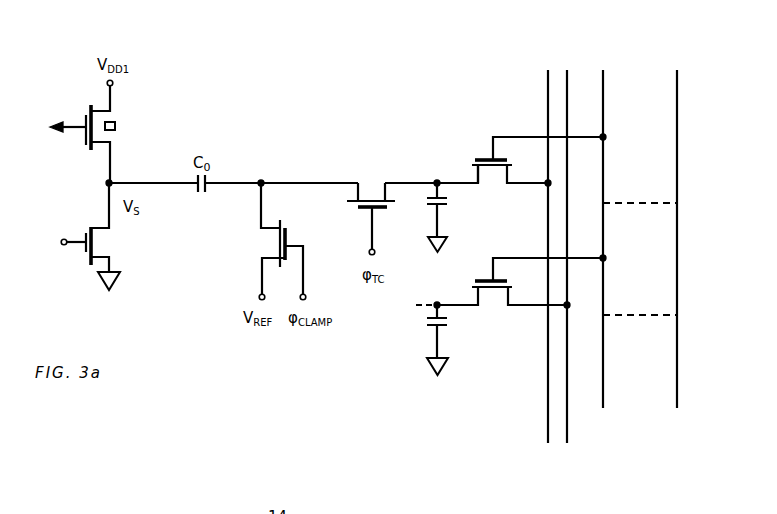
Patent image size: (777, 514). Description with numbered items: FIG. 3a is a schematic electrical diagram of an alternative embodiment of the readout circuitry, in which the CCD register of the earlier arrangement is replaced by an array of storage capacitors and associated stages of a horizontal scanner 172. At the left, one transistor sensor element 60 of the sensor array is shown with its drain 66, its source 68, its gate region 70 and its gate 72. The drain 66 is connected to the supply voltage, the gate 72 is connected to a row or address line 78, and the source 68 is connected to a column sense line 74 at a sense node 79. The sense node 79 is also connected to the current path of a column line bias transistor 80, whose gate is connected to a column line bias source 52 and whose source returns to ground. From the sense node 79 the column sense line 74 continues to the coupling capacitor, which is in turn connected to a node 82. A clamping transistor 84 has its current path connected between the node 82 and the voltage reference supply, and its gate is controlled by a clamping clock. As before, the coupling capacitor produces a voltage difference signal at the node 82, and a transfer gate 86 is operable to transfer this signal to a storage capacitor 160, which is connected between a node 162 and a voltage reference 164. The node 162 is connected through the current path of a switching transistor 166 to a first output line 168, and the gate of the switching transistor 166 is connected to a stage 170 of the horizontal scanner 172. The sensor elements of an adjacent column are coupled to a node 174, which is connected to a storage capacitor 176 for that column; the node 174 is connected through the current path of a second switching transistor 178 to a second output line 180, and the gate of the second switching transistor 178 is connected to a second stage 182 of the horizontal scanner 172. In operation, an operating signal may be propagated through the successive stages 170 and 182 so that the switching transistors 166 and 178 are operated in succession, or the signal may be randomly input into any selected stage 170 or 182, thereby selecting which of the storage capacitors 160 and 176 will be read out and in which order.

The column line bias source 52 is at (65, 239).
The transistor sensor element 60 is at (118, 130).
The drain 66 is at (111, 101).
The source 68 is at (110, 148).
The gate region 70 is at (115, 127).
The gate 72 is at (84, 140).
The column sense line 74 is at (172, 185).
The row line 78 is at (76, 124).
The sense node 79 is at (108, 184).
The column line bias transistor 80 is at (81, 236).
The node 82 is at (262, 181).
The clamping transistor 84 is at (285, 225).
The transfer gate 86 is at (356, 211).
The storage capacitor 160 is at (449, 203).
The node 162 is at (435, 180).
The voltage reference 164 is at (428, 243).
The switching transistor 166 is at (493, 173).
The first output line 168 is at (547, 105).
The stage of horizontal scanner 170 is at (656, 156).
The horizontal scanner 172 is at (645, 58).
The node 174 is at (440, 301).
The storage capacitor 176 is at (449, 322).
The second switching transistor 178 is at (497, 297).
The second output line 180 is at (565, 392).
The second stage 182 is at (656, 277).